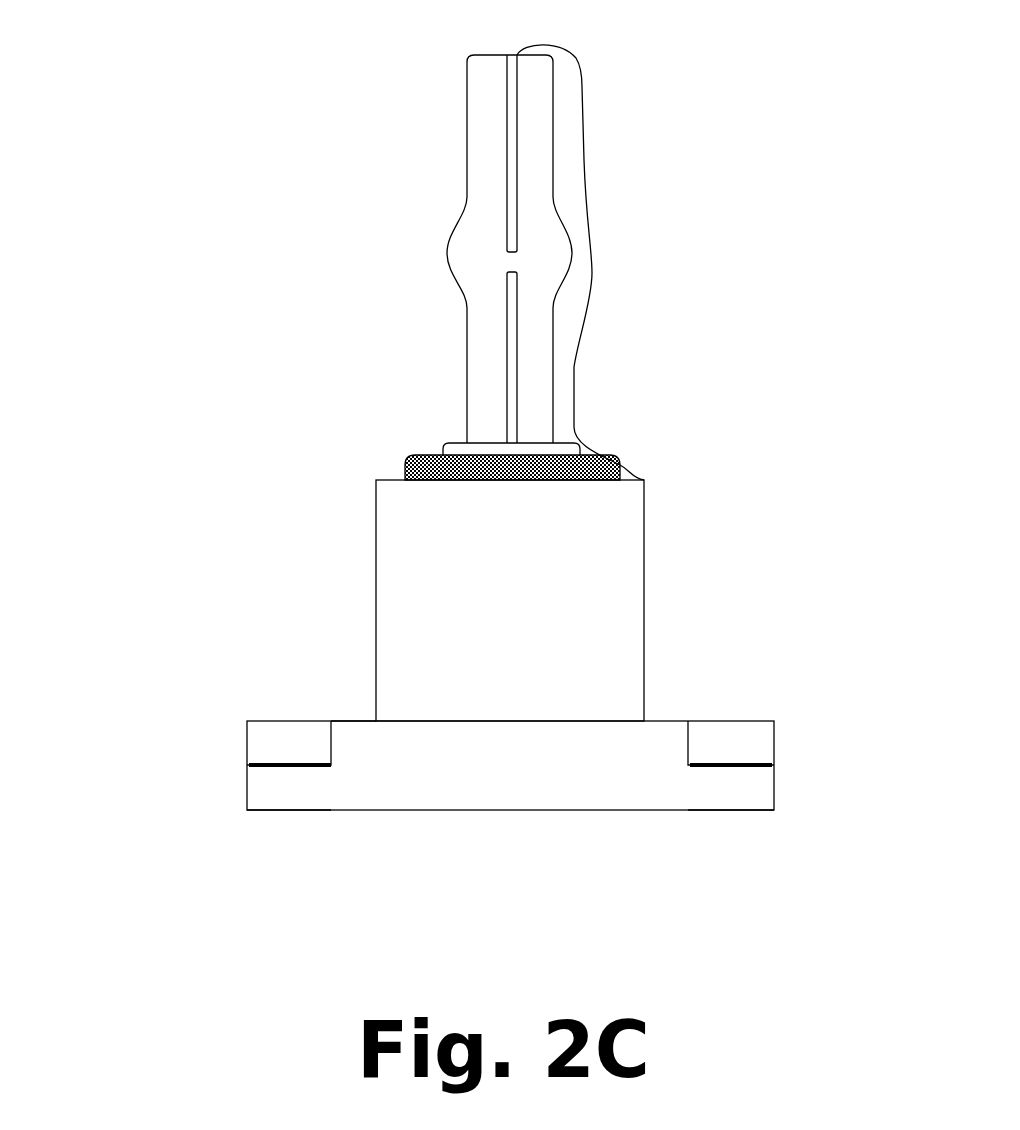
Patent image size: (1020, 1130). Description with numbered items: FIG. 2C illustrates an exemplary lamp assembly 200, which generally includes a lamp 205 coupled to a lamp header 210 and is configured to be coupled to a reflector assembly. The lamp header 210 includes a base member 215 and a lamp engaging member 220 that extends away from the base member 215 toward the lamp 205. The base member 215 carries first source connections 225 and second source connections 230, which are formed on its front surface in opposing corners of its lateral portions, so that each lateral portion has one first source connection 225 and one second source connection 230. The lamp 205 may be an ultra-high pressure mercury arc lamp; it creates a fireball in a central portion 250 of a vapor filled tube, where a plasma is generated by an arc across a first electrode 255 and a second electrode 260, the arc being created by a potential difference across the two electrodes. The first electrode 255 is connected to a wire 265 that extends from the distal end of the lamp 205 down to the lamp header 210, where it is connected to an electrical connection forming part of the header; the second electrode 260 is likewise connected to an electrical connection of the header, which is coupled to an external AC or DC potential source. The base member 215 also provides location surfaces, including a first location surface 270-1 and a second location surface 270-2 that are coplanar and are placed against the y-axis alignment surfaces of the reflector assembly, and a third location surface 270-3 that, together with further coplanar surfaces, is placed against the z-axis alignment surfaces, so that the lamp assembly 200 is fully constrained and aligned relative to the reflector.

The lamp assembly 200 is at (235, 145).
The lamp 205 is at (427, 278).
The lamp header 210 is at (298, 560).
The base member 215 is at (540, 779).
The lamp engaging member 220 is at (647, 600).
The first source connections 225 is at (738, 767).
The second source connections 230 is at (247, 762).
The central portion 250 is at (507, 272).
The first electrode 255 is at (507, 125).
The second electrode 260 is at (507, 360).
The wire 265 is at (582, 87).
The first location surface 270-1 is at (735, 782).
The second location surface 270-2 is at (288, 780).
The third location surface 270-3 is at (352, 721).